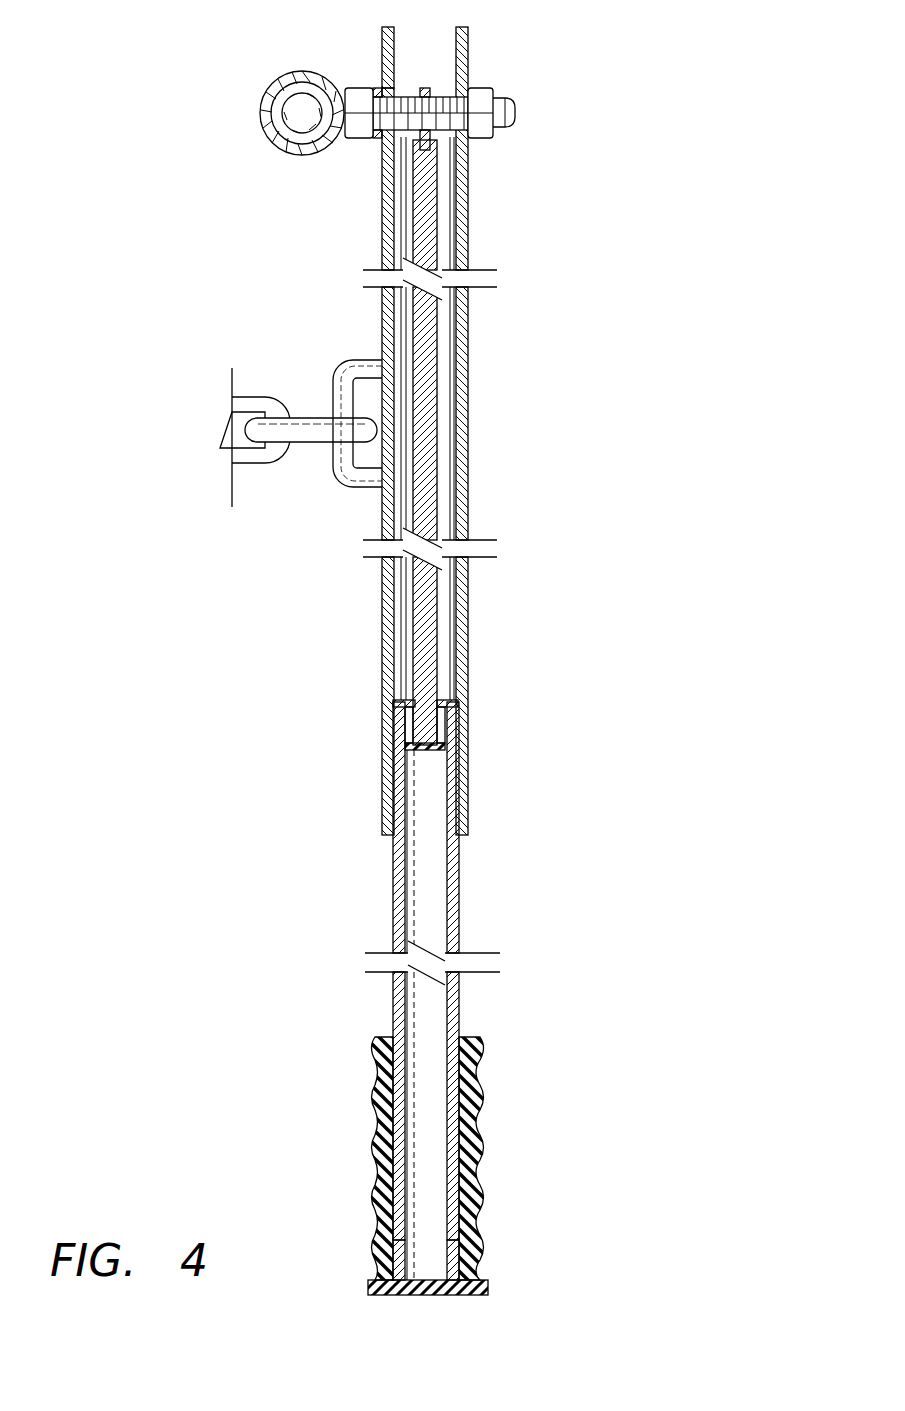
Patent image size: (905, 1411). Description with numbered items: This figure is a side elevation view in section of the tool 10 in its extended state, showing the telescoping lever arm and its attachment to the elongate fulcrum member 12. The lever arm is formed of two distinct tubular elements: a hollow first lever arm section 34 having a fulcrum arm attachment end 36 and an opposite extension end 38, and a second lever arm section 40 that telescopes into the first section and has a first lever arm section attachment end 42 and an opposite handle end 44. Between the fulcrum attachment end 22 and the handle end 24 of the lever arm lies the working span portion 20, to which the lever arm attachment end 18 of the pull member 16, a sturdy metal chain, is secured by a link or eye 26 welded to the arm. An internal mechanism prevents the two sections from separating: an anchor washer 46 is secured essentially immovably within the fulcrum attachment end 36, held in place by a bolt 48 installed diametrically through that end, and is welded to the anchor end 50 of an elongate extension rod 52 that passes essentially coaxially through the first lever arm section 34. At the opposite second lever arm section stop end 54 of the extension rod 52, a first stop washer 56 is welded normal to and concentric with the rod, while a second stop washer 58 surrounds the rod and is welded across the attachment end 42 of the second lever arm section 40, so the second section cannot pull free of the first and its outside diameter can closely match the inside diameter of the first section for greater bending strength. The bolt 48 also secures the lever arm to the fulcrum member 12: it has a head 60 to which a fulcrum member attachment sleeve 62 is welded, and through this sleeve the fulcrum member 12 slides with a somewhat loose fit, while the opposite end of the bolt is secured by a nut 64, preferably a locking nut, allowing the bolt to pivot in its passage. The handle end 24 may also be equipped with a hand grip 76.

The tool 10 is at (212, 1003).
The fulcrum member 12 is at (260, 110).
The pull member 16 is at (232, 404).
The lever arm attachment end 18 is at (304, 418).
The working span portion 20 is at (470, 420).
The fulcrum attachment end 22 is at (466, 55).
The handle end 24 is at (470, 1153).
The link or eye 26 is at (340, 485).
The first lever arm section 34 is at (468, 500).
The fulcrum arm attachment end 36 is at (381, 44).
The extension end 38 is at (470, 790).
The second lever arm section 40 is at (470, 925).
The first lever arm section attachment end 42 is at (395, 718).
The handle end 44 is at (393, 1255).
The anchor washer 46 is at (426, 88).
The bolt 48 is at (515, 112).
The anchor end 50 is at (437, 158).
The extension rod 52 is at (437, 240).
The second lever arm section stop end 54 is at (437, 722).
The first stop washer 56 is at (405, 748).
The second stop washer 58 is at (383, 700).
The head 60 is at (355, 138).
The fulcrum member attachment sleeve 62 is at (270, 140).
The nut 64 is at (490, 139).
The hand grip 76 is at (368, 1150).